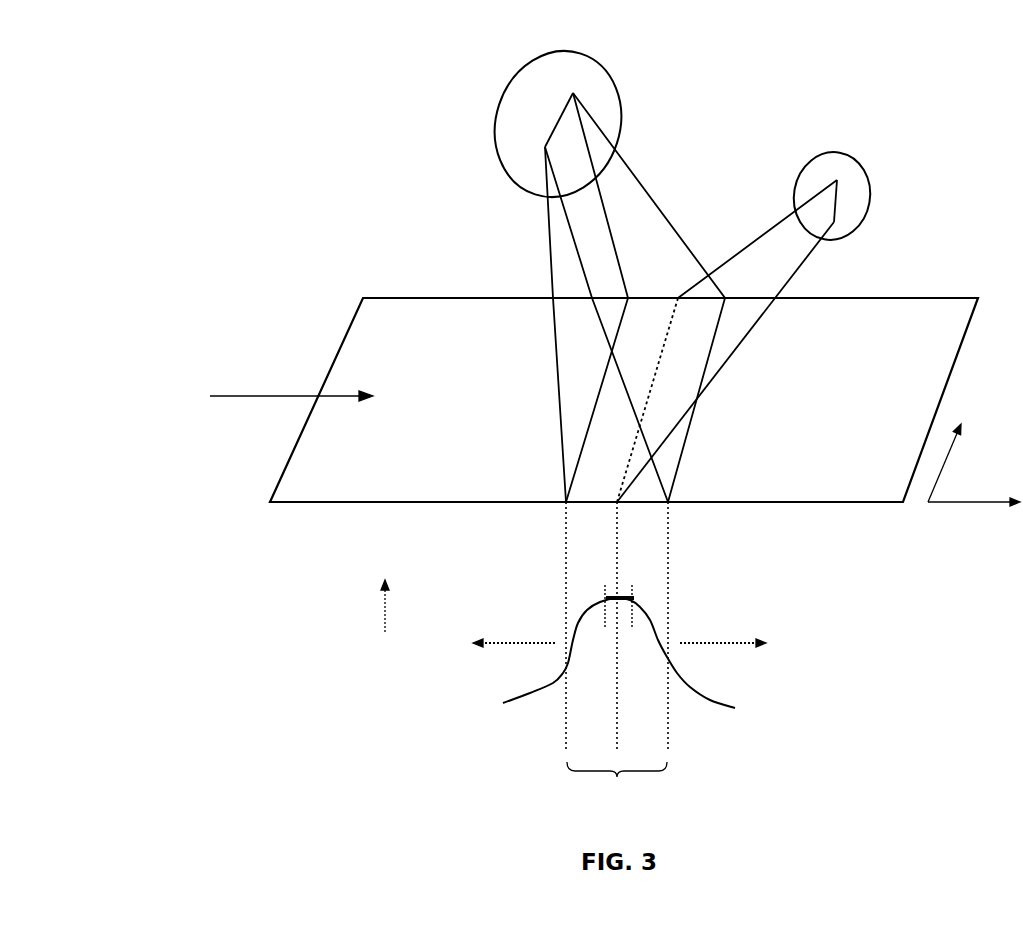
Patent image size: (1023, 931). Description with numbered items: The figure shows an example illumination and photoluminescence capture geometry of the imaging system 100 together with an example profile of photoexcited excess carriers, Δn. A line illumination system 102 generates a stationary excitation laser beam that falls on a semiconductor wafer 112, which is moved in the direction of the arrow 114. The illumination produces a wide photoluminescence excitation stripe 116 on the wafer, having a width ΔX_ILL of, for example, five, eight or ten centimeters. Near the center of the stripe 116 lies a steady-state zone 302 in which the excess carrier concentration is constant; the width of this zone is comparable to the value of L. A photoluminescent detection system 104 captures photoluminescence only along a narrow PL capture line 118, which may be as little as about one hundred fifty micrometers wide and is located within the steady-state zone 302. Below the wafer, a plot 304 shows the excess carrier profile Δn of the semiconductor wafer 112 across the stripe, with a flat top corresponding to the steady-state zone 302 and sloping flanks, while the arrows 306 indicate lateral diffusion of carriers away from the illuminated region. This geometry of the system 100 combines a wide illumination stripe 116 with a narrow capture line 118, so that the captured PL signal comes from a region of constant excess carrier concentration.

The imaging system 100 is at (206, 108).
The line illumination system 102 is at (470, 92).
The photoluminescent detection system 104 is at (782, 145).
The semiconductor wafer 112 is at (315, 512).
The arrow 114 is at (291, 383).
The photoluminescence excitation stripe 116 is at (617, 655).
The PL capture line 118 is at (657, 393).
The steady-state zone 302 is at (638, 594).
The plot 304 is at (505, 705).
The arrows 306 is at (619, 630).